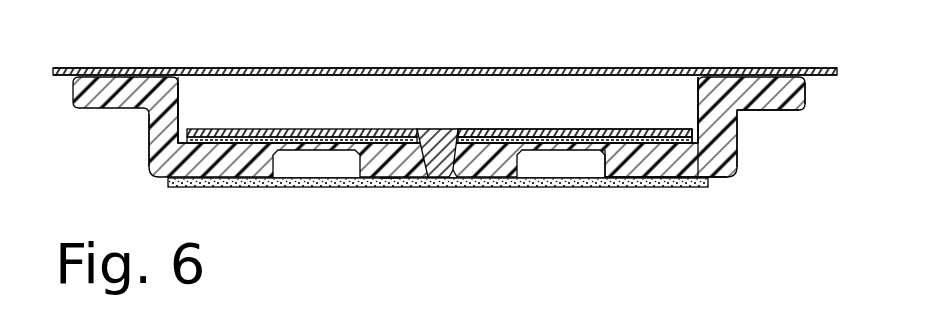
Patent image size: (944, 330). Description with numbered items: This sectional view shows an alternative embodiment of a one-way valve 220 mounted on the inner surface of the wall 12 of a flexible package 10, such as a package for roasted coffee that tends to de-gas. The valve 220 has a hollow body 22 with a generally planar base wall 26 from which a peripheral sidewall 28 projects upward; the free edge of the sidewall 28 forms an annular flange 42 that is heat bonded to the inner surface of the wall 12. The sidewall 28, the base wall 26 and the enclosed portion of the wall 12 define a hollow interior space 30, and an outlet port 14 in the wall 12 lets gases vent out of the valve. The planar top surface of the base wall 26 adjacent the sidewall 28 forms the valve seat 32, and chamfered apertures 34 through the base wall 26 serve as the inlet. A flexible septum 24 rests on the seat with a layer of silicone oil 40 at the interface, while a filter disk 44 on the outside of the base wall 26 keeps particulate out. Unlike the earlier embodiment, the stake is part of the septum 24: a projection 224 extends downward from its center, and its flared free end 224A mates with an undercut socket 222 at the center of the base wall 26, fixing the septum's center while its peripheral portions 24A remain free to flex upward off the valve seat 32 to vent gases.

The flexible package 10 is at (402, 65).
The wall 12 is at (442, 70).
The outlet port 14 is at (228, 70).
The hollow body 22 is at (710, 110).
The septum 24 is at (507, 123).
The peripheral edge of the septum 24A is at (690, 129).
The base wall 26 is at (697, 153).
The sidewall 28 is at (155, 128).
The hollow interior space 30 is at (615, 97).
The valve seat 32 is at (637, 150).
The chamfered apertures 34 is at (307, 162).
The silicone oil 40 is at (325, 129).
The annular flange 42 is at (738, 98).
The filter disk 44 is at (166, 182).
The valve 220 is at (466, 127).
The socket 222 is at (454, 180).
The projection 224 is at (438, 148).
The free end of the stake 224A is at (390, 183).